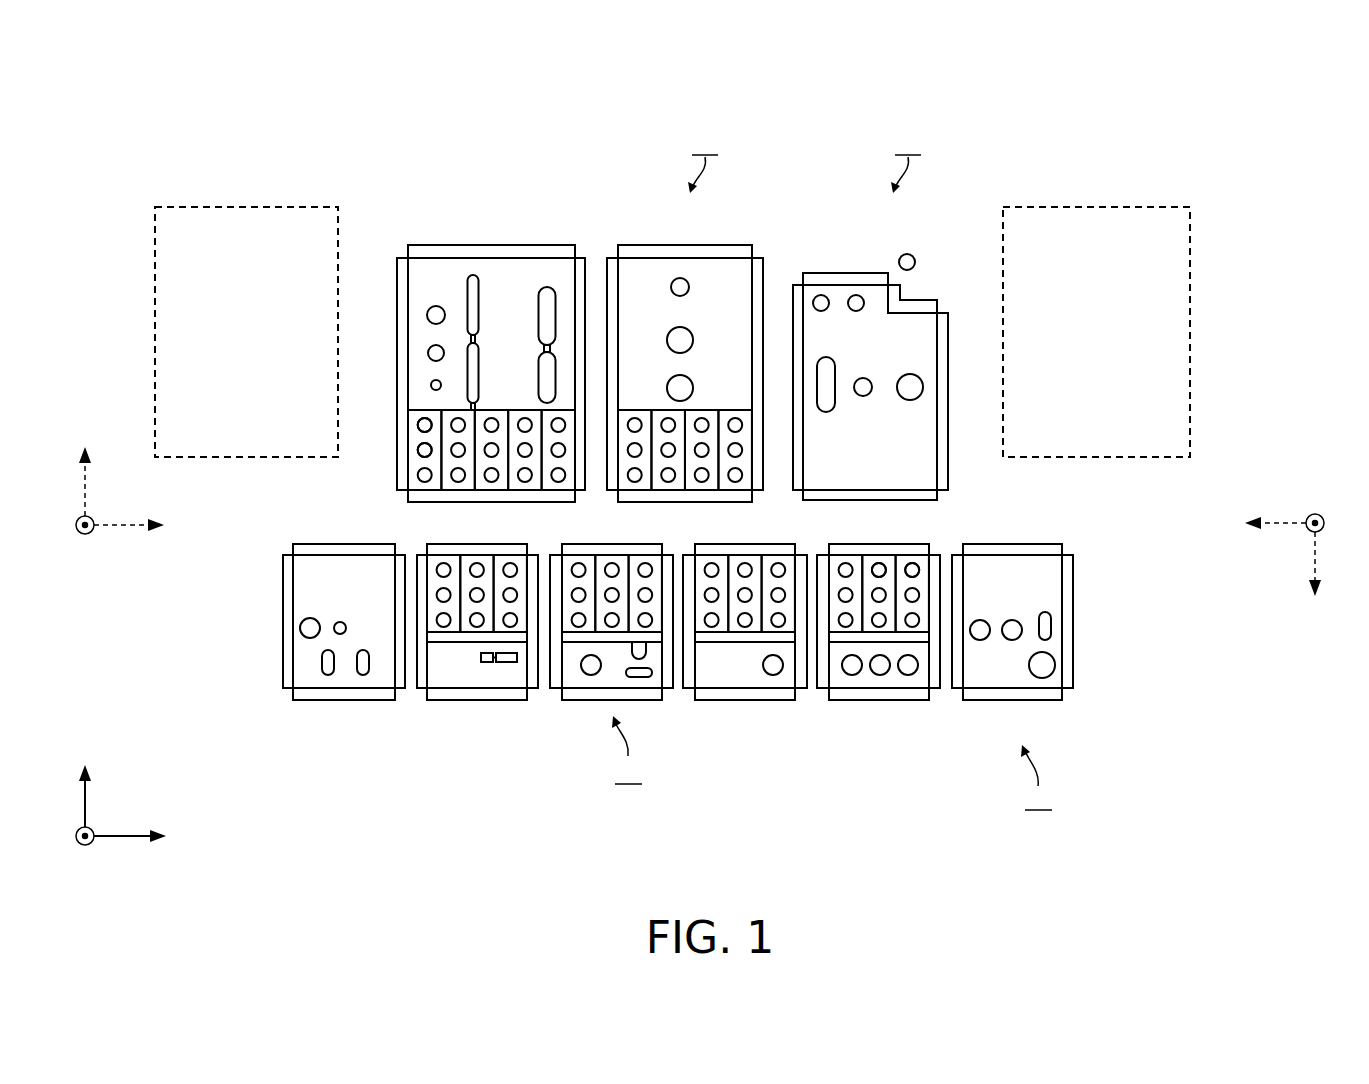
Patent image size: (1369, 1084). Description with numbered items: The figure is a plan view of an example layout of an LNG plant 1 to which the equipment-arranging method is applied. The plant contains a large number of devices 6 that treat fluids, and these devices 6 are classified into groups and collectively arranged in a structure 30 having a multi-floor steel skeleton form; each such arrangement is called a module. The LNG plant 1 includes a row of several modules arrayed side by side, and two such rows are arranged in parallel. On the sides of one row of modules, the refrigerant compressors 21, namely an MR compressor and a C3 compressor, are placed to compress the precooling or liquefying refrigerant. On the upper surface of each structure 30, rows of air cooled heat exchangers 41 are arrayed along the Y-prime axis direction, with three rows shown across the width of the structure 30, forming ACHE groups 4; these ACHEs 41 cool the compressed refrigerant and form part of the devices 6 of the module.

The LNG plant 1 is at (1047, 100).
The ACHE group 4 is at (404, 468).
The device 6 is at (436, 306).
The refrigerant compressor 21 is at (249, 206).
The structure 30 is at (557, 245).
The air cooled heat exchanger (ACHE) 41 is at (417, 425).